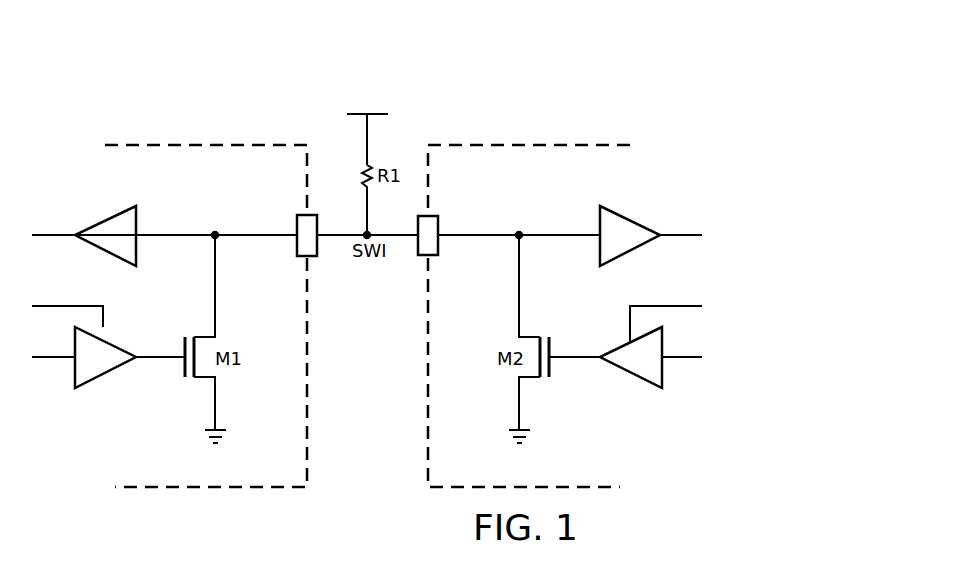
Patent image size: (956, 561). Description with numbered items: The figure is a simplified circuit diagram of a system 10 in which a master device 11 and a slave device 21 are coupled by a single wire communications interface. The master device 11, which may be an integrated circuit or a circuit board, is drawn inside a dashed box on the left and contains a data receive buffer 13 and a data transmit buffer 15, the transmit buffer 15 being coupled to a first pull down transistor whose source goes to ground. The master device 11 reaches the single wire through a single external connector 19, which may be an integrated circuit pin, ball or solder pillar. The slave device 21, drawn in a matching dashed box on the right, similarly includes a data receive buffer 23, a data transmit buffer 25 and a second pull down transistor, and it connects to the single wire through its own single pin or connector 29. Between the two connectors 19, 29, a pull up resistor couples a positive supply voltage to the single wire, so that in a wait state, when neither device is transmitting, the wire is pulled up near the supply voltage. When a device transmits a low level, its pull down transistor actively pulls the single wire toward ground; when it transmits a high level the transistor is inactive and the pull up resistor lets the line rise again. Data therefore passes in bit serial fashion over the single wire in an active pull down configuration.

The system 10 is at (578, 63).
The master device 11 is at (204, 145).
The data receive buffer 13 is at (106, 215).
The data transmit buffer 15 is at (116, 370).
The single external connector 19 is at (295, 247).
The slave device 21 is at (529, 145).
The data receive buffer 23 is at (629, 216).
The data transmit buffer 25 is at (621, 371).
The single pin or connector 29 is at (440, 247).